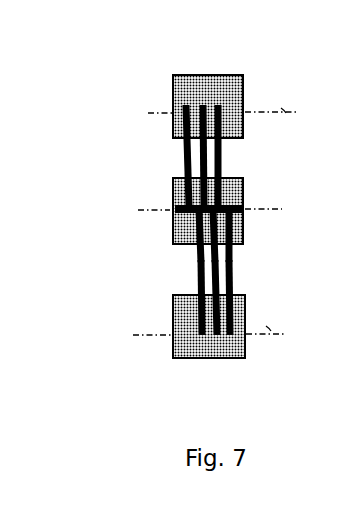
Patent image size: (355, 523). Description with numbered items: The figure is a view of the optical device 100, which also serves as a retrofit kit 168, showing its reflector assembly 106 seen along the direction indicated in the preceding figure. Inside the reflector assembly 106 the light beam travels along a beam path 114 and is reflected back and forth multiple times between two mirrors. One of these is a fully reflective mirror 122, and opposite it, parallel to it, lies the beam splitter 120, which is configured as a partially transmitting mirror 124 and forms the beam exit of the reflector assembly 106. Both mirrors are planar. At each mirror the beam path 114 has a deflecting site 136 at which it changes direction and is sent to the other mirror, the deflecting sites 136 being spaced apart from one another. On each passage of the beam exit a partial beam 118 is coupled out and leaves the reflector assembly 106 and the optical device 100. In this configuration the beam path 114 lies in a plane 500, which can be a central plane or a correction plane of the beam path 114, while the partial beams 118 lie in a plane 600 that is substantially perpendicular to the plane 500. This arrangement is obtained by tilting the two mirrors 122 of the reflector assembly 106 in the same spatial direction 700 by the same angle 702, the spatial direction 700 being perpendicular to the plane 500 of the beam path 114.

The optical device 100 is at (133, 90).
The reflector assembly 106 is at (133, 90).
The retrofit kit 168 is at (163, 83).
The fully reflective mirror 122 is at (232, 102).
The spatial direction 700 is at (247, 113).
The angle 702 is at (283, 111).
The beam splitter 120 is at (253, 186).
The partially transmitting mirror 124 is at (232, 180).
The plane 600 is at (268, 206).
The plane 500 is at (250, 212).
The partial beam 118 is at (175, 214).
The beam path 114 is at (236, 273).
The deflecting site 136 is at (300, 358).